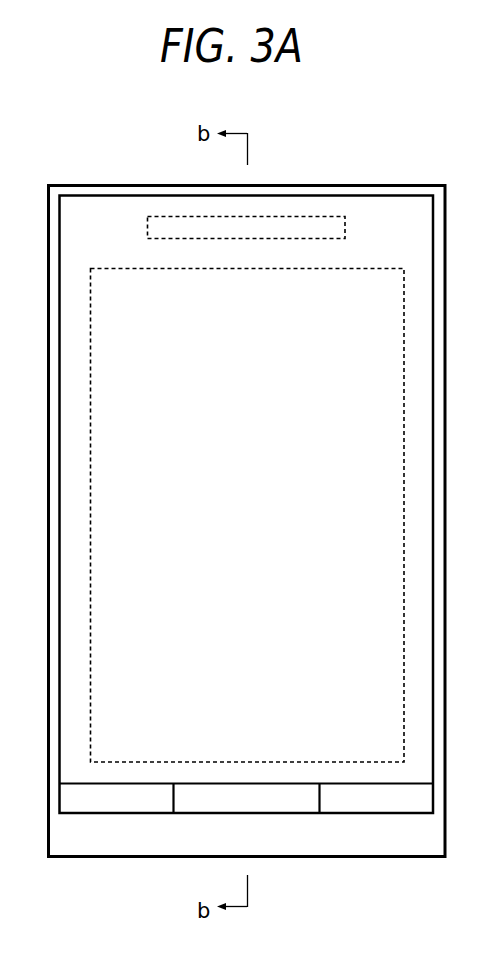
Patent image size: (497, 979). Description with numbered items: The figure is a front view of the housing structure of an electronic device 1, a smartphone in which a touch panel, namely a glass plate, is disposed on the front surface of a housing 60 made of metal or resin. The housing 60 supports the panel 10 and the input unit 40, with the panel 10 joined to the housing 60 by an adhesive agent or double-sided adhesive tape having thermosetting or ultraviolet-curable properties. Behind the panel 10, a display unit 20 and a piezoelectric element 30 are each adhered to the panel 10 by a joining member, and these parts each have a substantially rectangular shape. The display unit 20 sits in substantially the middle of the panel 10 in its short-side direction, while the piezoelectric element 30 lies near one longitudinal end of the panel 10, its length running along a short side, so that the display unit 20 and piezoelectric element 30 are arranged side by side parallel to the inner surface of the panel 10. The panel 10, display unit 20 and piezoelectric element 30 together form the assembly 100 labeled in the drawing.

The electronic device 1 is at (108, 168).
The housing 60 is at (283, 185).
The display device 100 is at (425, 125).
The panel 10 is at (366, 195).
The display unit 20 is at (374, 268).
The piezoelectric element 30 is at (320, 216).
The input unit 40 is at (73, 805).